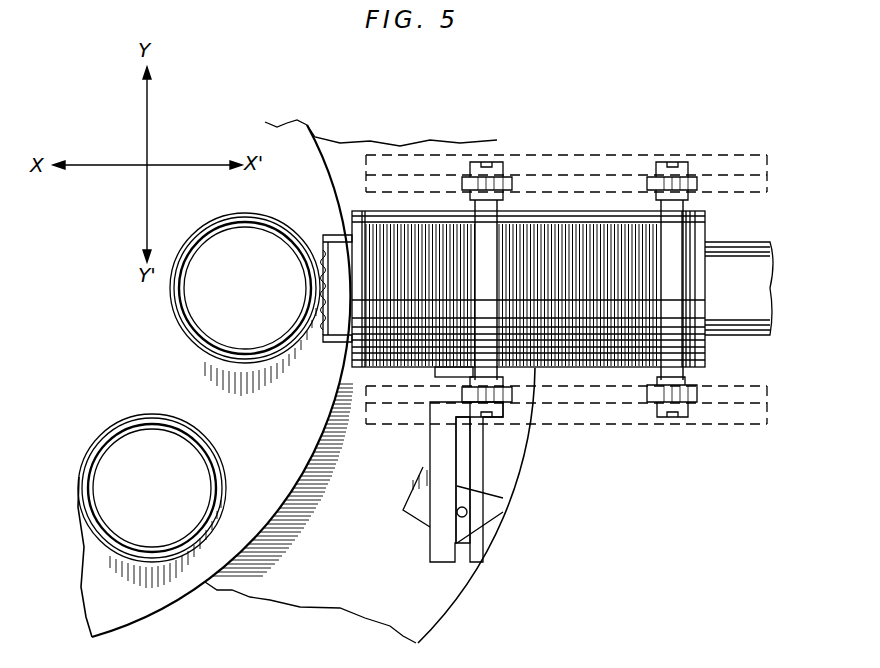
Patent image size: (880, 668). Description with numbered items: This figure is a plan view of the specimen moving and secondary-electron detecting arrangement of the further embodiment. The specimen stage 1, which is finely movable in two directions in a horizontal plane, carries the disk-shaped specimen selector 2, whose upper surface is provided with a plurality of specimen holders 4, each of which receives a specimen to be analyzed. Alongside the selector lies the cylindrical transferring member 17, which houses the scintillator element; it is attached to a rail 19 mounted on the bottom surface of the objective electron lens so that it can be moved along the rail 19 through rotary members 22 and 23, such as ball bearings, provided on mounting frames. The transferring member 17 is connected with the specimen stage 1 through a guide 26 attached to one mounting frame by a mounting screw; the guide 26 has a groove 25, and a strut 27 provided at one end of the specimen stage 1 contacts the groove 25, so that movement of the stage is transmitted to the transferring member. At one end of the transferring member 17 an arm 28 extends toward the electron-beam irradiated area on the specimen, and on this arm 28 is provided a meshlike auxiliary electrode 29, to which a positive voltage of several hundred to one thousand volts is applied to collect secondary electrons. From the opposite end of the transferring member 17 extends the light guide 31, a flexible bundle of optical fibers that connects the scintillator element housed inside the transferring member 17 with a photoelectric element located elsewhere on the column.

The specimen stage 1 is at (443, 590).
The disk-shaped specimen selector 2 is at (263, 508).
The specimen holders 4 is at (182, 319).
The cylindrical transferring member 17 is at (597, 243).
The rail 19 is at (636, 161).
The rotary member 22 is at (532, 209).
The rotary member 23 is at (690, 177).
The groove 25 is at (465, 466).
The guide 26 is at (438, 448).
The strut 27 is at (467, 512).
The arm 28 is at (335, 234).
The meshlike auxiliary electrode 29 is at (327, 345).
The light guide 31 is at (752, 285).